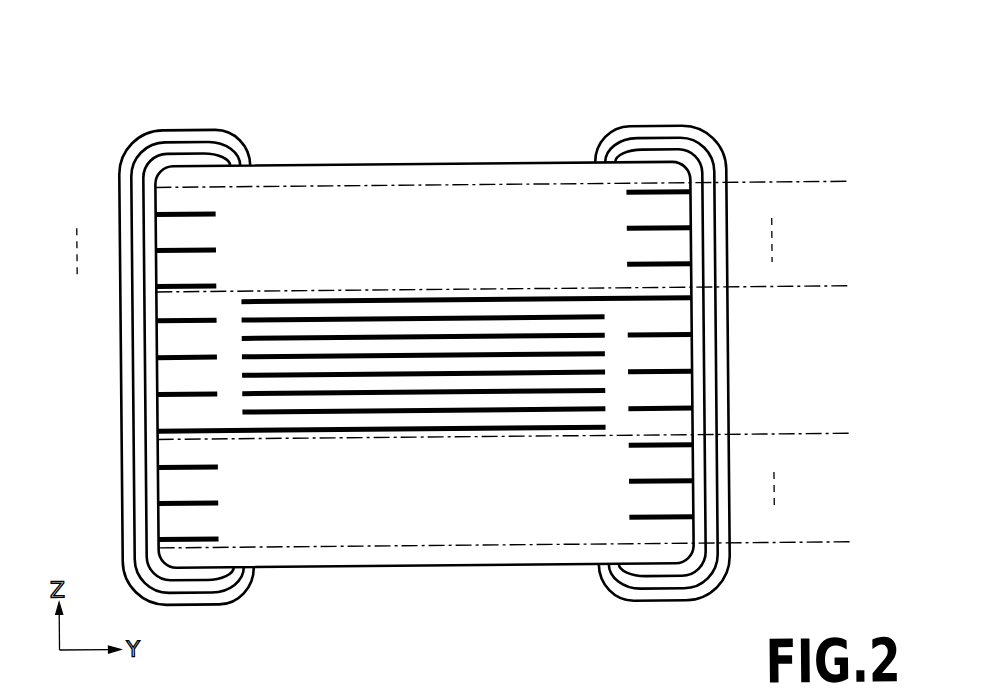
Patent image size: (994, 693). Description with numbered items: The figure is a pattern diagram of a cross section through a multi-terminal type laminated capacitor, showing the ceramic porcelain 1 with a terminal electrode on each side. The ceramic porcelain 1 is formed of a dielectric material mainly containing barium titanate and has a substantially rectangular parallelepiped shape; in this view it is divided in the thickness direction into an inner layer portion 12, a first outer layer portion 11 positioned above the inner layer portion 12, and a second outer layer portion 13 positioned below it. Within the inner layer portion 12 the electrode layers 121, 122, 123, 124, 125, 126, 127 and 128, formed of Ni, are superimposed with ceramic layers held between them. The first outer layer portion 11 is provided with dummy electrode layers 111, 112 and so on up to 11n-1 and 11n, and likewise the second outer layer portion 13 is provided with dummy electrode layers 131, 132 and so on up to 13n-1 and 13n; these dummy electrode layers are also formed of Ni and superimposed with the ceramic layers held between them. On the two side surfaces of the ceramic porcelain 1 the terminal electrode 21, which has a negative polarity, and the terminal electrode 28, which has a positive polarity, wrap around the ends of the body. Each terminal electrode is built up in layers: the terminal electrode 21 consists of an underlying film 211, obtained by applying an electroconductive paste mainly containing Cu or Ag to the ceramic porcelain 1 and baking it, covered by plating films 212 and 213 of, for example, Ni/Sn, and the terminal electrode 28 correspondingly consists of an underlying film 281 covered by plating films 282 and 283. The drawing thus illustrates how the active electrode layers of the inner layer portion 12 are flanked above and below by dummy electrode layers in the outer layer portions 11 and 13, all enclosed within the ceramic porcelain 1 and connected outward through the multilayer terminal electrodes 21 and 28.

The ceramic porcelain 1 is at (415, 164).
The first outer layer portion 11 is at (469, 240).
The inner layer portion 12 is at (464, 365).
The second outer layer portion 13 is at (472, 492).
The dummy electrode layer 111 is at (678, 196).
The dummy electrode layer 112 is at (177, 210).
The dummy electrode layer 11n is at (177, 282).
The dummy electrode layer 11n-1 is at (678, 268).
The electrode layer 121 is at (678, 302).
The electrode layer 122 is at (177, 316).
The electrode layer 123 is at (678, 340).
The electrode layer 124 is at (177, 353).
The electrode layer 125 is at (678, 376).
The electrode layer 126 is at (177, 390).
The electrode layer 127 is at (678, 413).
The electrode layer 128 is at (177, 426).
The dummy electrode layer 131 is at (678, 450).
The dummy electrode layer 132 is at (177, 462).
The dummy electrode layer 13n is at (177, 534).
The dummy electrode layer 13n-1 is at (678, 522).
The terminal electrode 21 is at (683, 331).
The underlying film 211 is at (642, 158).
The plating film 212 is at (663, 145).
The plating film 213 is at (687, 128).
The terminal electrode 28 is at (160, 337).
The underlying film 281 is at (205, 158).
The plating film 282 is at (181, 146).
The plating film 283 is at (157, 128).